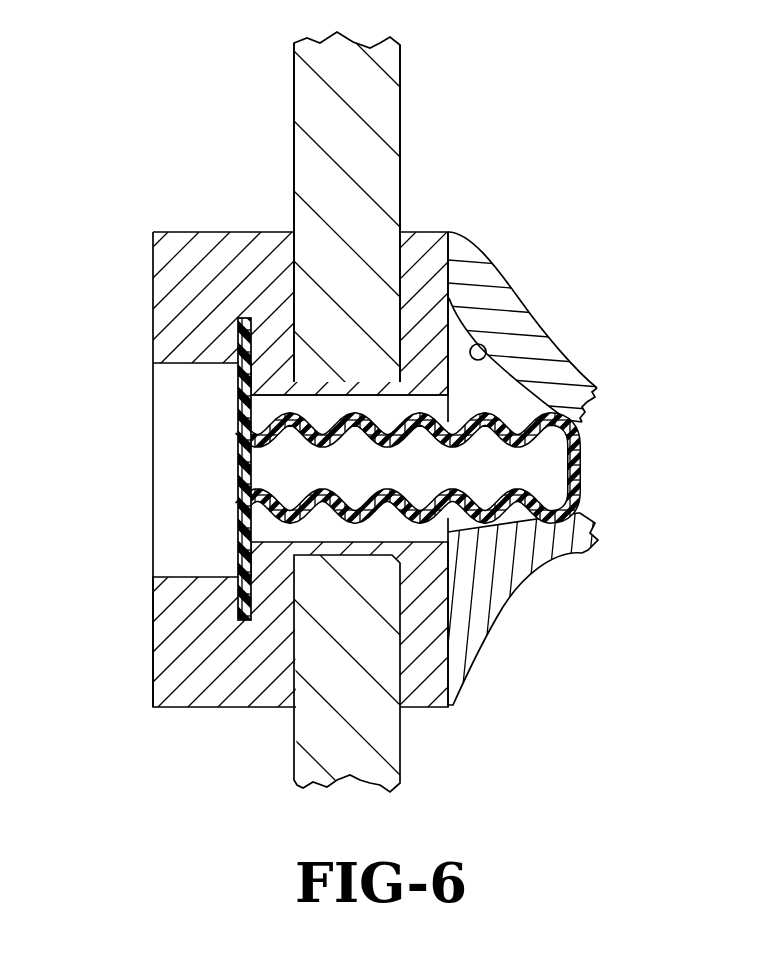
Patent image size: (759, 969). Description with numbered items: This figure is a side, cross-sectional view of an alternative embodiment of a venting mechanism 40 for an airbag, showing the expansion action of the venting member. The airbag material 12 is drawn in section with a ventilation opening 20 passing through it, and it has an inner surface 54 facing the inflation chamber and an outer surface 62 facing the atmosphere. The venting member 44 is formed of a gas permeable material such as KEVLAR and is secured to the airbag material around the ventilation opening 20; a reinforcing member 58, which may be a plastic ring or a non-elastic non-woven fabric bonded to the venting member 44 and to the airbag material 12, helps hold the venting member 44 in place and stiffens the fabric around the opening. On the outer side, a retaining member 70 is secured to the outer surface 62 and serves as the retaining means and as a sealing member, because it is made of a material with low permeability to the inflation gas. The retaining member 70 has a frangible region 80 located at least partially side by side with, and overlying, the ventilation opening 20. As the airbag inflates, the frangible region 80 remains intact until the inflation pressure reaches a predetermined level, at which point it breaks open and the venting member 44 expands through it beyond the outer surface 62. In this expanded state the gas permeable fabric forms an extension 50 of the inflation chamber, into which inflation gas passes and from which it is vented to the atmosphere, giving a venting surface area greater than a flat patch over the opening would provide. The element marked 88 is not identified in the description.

The airbag material 12 is at (348, 137).
The ventilation opening 20 is at (345, 548).
The venting mechanism 40 is at (603, 130).
The venting member 44 is at (572, 468).
The extension of the inflation chamber 50 is at (432, 483).
The inner surface of the airbag material 54 is at (294, 190).
The reinforcing member 58 is at (195, 290).
The outer surface of the airbag material 62 is at (400, 118).
The retaining member 70 is at (468, 292).
The frangible region 80 is at (587, 416).
The seal bead 88 is at (490, 362).